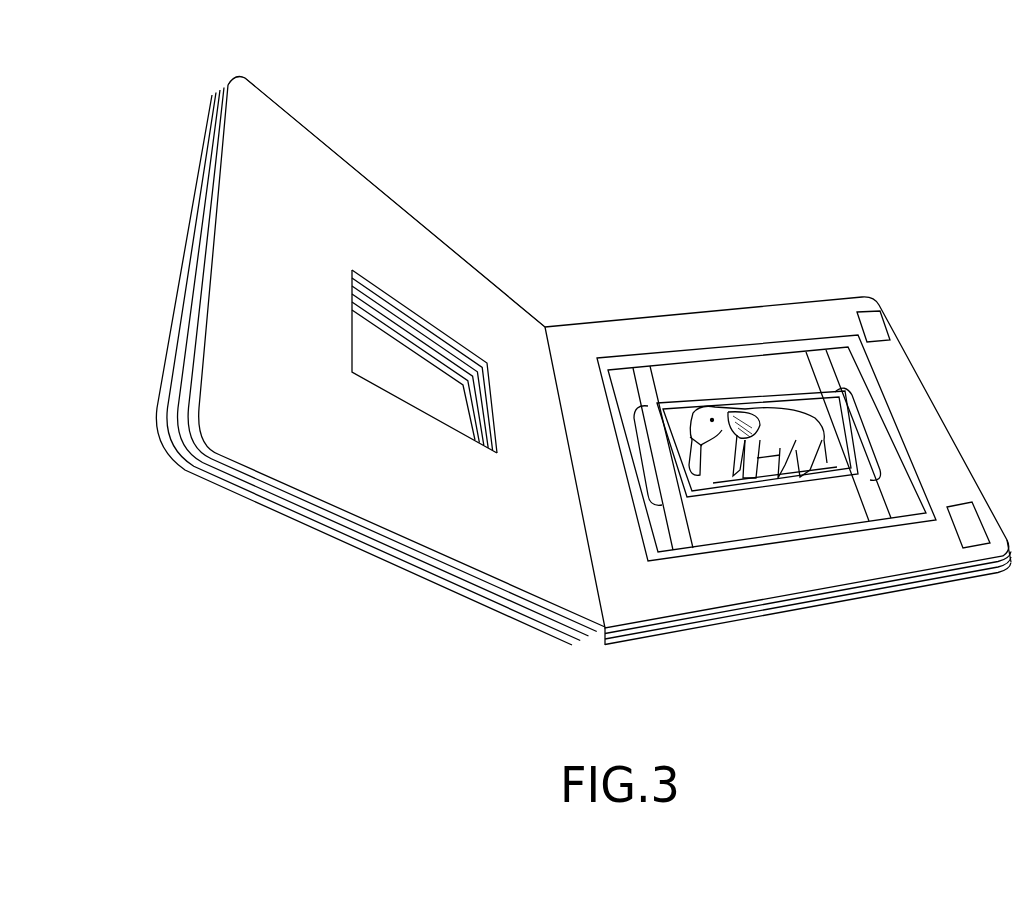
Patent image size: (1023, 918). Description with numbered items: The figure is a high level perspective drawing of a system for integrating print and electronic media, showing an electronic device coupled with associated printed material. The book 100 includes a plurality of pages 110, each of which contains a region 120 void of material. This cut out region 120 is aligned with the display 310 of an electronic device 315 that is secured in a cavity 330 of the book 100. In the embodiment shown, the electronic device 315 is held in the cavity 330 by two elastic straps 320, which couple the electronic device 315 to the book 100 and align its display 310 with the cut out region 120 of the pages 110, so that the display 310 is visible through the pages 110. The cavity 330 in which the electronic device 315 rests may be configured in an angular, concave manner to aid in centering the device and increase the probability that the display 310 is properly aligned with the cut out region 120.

The book 100 is at (940, 140).
The pages 110 is at (294, 280).
The region void of material 120 is at (428, 373).
The display 310 is at (772, 482).
The electronic device 315 is at (708, 487).
The elastic straps 320 is at (650, 462).
The cavity 330 is at (692, 362).